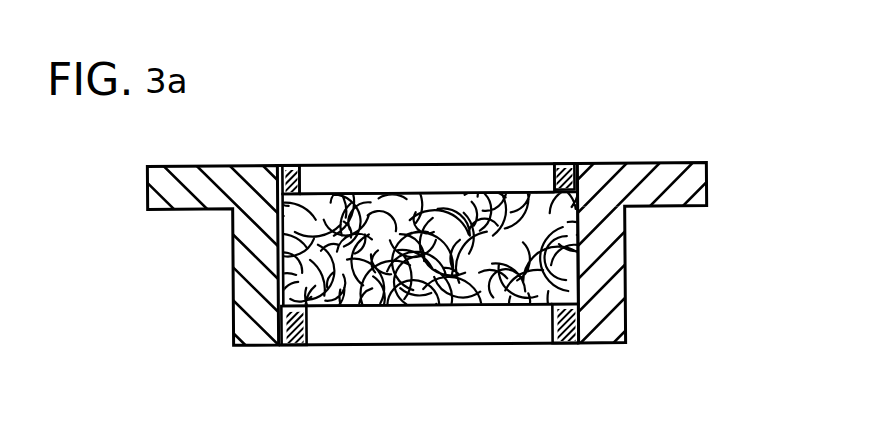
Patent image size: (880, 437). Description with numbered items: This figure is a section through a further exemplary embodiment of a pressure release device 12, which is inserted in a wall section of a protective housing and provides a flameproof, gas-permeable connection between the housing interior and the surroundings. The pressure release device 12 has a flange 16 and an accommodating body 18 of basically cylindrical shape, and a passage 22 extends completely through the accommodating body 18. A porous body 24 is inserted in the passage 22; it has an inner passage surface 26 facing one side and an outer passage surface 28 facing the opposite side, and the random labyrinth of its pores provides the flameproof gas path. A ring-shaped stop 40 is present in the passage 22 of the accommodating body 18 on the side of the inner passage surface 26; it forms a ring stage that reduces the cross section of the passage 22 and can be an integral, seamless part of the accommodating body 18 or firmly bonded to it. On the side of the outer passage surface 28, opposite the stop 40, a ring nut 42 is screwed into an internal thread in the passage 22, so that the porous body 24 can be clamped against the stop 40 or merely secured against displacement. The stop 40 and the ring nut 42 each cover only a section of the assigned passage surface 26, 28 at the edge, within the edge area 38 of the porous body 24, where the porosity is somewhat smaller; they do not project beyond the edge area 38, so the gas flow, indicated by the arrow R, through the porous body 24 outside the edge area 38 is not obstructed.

The pressure release device 12 is at (432, 194).
The flange 16 is at (656, 213).
The accommodating body 18 is at (637, 146).
The gas-permeable passage 22 is at (385, 168).
The porous body 24 is at (503, 181).
The inner passage surface 26 is at (455, 193).
The outer passage surface 28 is at (470, 290).
The edge area 38 is at (481, 365).
The stop 40 is at (288, 164).
The ring nut 42 is at (565, 344).
The direction of radiation R is at (427, 188).